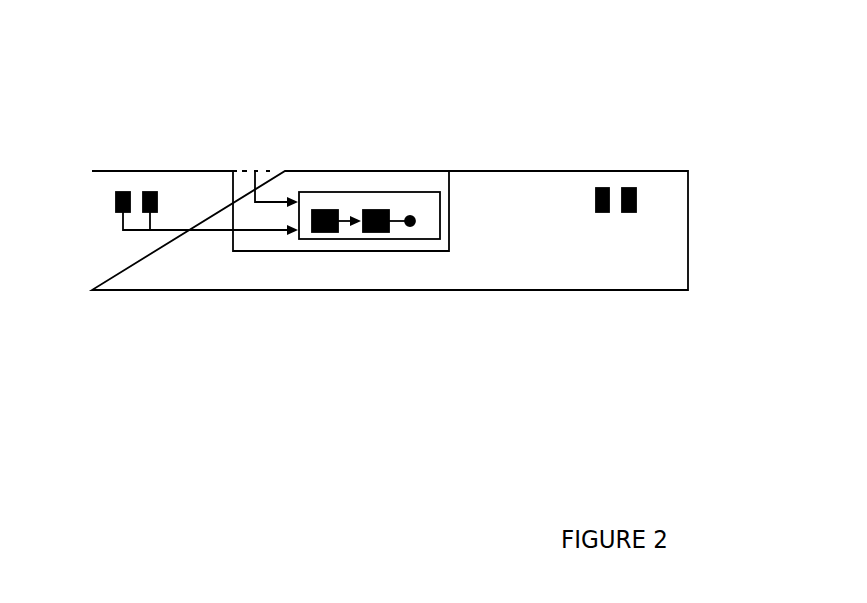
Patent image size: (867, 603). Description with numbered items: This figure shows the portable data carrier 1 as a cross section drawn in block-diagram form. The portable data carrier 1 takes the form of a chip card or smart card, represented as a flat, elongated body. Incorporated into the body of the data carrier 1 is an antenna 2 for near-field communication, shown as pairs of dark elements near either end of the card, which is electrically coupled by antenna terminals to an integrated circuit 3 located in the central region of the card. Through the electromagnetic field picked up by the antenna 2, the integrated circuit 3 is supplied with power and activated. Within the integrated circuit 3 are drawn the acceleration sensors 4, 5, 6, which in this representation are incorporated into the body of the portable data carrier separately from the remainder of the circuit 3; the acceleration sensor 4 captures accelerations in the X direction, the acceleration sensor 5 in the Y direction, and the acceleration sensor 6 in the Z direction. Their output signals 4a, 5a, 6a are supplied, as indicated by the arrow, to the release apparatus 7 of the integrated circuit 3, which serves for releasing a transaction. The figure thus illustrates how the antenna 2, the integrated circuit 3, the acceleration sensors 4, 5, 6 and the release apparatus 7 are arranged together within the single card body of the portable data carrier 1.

The portable data carrier 1 is at (92, 263).
The antenna 2 is at (153, 192).
The integrated circuit 3 is at (320, 197).
The acceleration sensor 4 is at (291, 301).
The acceleration sensor 5 is at (291, 301).
The acceleration sensor 6 is at (317, 233).
The output signal 4a is at (411, 170).
The output signal 5a is at (411, 170).
The output signal 6a is at (345, 215).
The release apparatus 7 is at (373, 232).